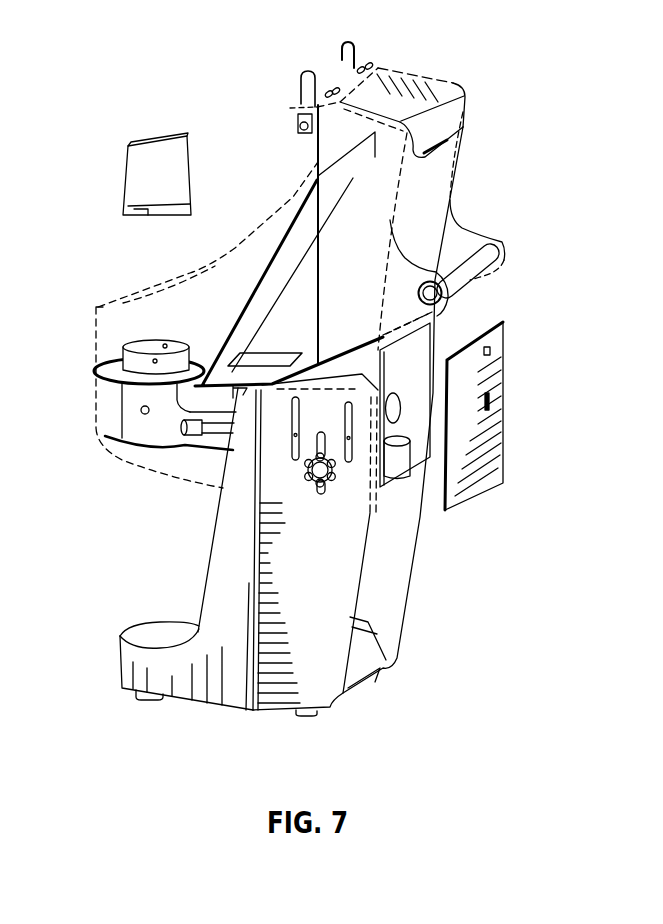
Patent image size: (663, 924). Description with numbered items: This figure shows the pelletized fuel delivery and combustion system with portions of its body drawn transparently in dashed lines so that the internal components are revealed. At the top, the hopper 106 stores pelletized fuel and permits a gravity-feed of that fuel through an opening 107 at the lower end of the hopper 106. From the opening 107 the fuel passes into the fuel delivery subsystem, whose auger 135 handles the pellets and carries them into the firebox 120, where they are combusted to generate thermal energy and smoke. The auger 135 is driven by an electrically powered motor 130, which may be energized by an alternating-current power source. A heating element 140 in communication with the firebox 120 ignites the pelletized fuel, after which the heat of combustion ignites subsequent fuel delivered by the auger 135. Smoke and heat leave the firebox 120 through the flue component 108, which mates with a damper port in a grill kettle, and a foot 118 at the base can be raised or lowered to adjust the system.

The hopper 106 is at (381, 252).
The opening 107 is at (270, 365).
The flue component 108 is at (170, 162).
The foot 118 is at (193, 685).
The firebox 120 is at (121, 404).
The motor 130 is at (398, 410).
The auger 135 is at (179, 414).
The heating element 140 is at (208, 398).